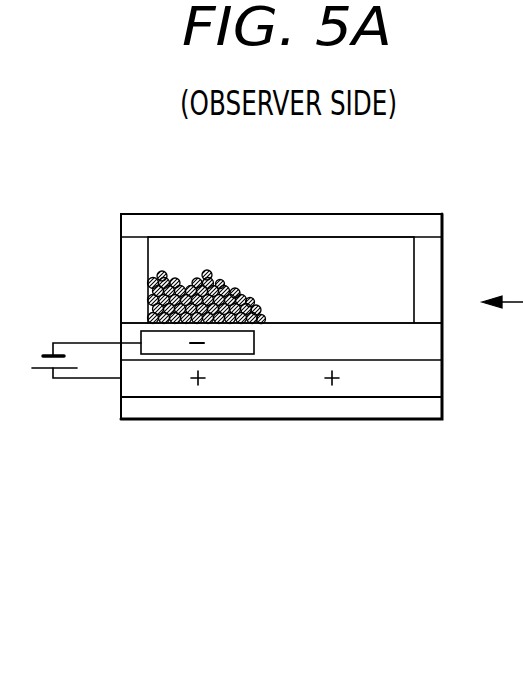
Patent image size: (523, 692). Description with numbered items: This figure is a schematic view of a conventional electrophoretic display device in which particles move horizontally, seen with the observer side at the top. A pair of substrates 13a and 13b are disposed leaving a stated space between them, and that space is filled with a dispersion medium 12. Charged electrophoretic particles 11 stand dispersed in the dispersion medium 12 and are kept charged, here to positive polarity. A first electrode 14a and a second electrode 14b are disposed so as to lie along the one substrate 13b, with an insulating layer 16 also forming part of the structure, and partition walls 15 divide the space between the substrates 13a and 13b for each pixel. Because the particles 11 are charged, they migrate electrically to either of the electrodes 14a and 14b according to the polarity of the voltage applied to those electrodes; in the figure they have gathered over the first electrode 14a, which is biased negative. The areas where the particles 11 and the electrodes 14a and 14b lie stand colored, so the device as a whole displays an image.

The charged electrophoretic particles 11 is at (210, 271).
The dispersion medium 12 is at (166, 252).
The substrate 13a is at (379, 229).
The substrate 13b is at (362, 407).
The first electrode 14a is at (161, 343).
The second electrode 14b is at (403, 380).
The partition walls 15 is at (134, 264).
The insulating layer 16 is at (424, 343).